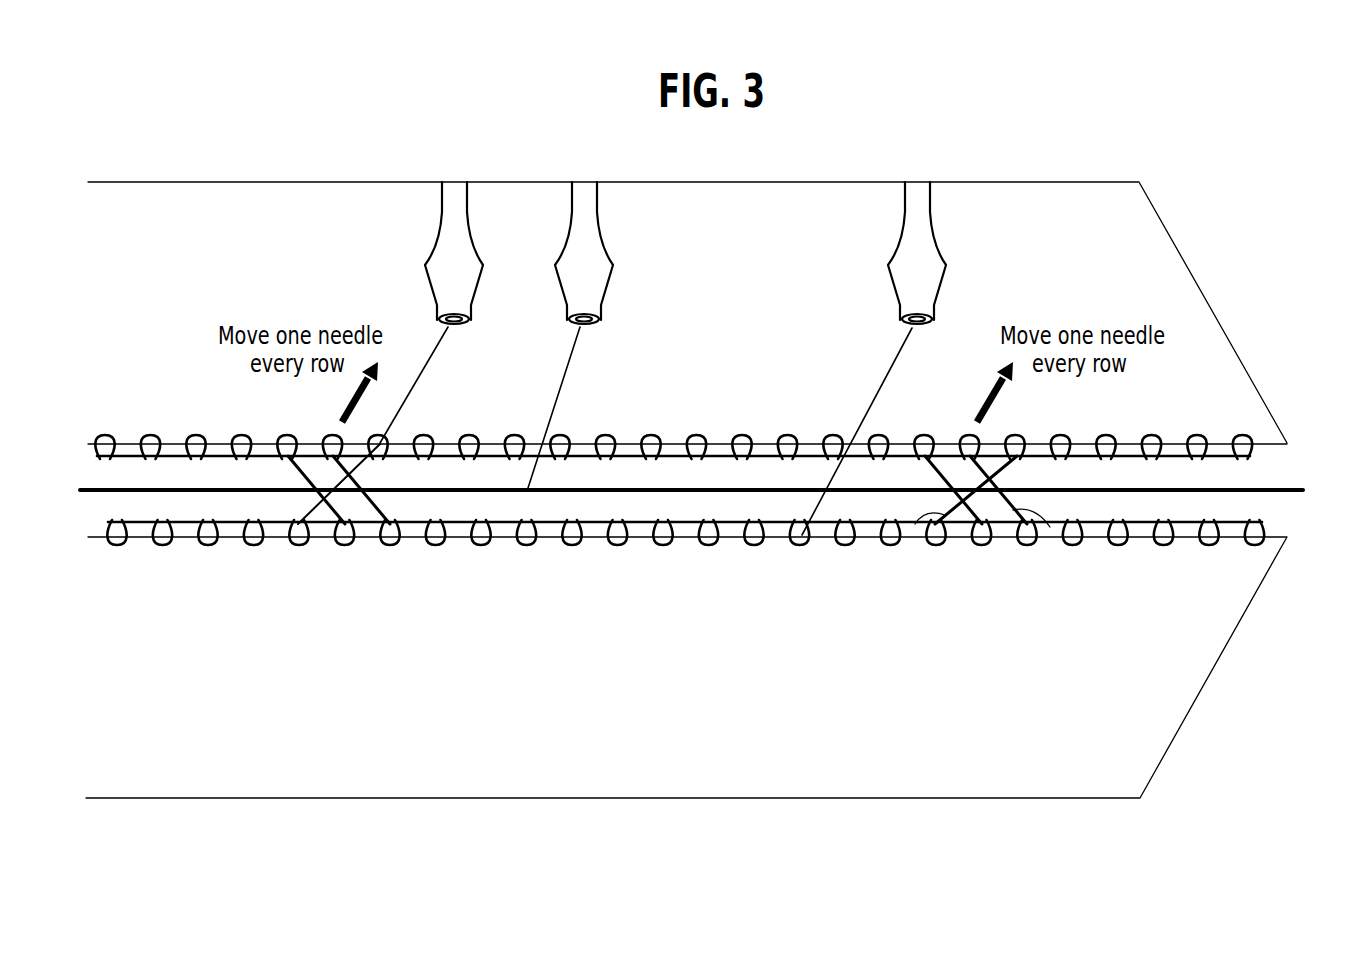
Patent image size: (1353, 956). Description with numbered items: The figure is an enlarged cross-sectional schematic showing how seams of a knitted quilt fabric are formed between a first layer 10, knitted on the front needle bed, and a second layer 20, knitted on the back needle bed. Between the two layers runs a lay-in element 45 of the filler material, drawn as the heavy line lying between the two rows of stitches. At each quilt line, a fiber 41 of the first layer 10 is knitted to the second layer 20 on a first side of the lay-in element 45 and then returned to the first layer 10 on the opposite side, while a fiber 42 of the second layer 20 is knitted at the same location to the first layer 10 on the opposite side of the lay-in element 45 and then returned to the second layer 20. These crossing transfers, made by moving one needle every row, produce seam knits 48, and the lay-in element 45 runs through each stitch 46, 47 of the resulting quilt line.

The first layer 10 is at (1274, 549).
The second layer 20 is at (1255, 421).
The fiber of the first layer 41 is at (1053, 523).
The fiber of the second layer 42 is at (1017, 473).
The lay-in element 45 is at (1287, 493).
The stitch 46 is at (913, 530).
The stitch 47 is at (950, 462).
The seam knit 48 is at (402, 551).